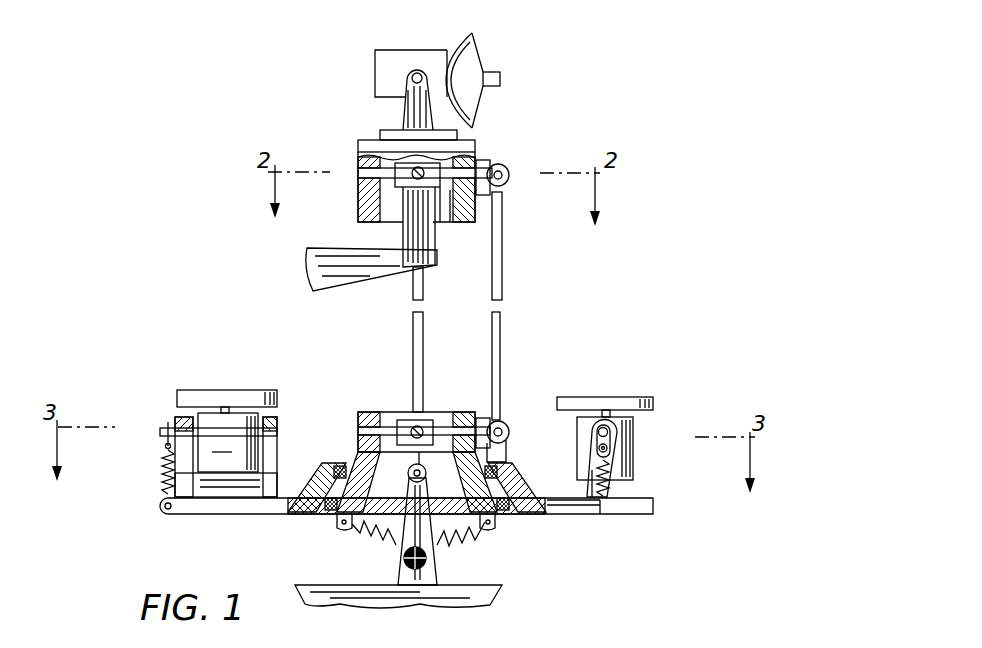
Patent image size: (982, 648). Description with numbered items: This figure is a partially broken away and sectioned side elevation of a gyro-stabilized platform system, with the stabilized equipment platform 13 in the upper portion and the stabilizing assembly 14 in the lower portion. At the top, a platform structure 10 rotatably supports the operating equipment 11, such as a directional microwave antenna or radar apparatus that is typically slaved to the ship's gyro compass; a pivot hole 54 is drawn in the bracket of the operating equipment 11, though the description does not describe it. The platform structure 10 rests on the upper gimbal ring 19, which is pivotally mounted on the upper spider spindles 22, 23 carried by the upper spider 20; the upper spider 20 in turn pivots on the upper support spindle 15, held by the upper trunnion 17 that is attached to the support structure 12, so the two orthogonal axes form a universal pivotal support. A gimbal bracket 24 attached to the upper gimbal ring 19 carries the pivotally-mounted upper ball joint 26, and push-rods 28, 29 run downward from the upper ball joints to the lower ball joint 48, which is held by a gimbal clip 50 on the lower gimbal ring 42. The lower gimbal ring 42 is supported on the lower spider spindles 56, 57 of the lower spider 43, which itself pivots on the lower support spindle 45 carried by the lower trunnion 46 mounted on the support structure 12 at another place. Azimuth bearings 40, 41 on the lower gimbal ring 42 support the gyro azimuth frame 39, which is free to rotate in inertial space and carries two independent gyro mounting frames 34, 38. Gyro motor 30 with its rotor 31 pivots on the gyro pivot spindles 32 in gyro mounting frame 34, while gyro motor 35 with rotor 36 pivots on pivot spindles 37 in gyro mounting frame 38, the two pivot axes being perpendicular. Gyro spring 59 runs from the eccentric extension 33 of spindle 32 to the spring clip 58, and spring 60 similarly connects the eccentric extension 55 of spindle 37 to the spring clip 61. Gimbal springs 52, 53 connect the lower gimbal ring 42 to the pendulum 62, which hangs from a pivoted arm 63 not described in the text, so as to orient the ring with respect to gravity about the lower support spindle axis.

The platform structure 10 is at (474, 145).
The operating equipment 11 is at (402, 92).
The support structure 12 is at (310, 266).
The equipment platform 13 is at (578, 58).
The stabilizing assembly 14 is at (590, 295).
The upper support spindle 15 is at (415, 186).
The upper trunnion 17 is at (405, 233).
The upper gimbal ring 19 is at (450, 213).
The upper spider 20 is at (400, 168).
The upper spider spindle 22 is at (470, 172).
The upper spider spindle 23 is at (360, 174).
The gimbal bracket 24 is at (503, 220).
The upper ball joint 26 is at (508, 165).
The push-rod 28 is at (503, 312).
The push-rod 29 is at (412, 312).
The gyro motor 30 is at (228, 442).
The rotor 31 is at (195, 392).
The gyro pivot spindle 32 is at (178, 424).
The eccentric extension 33 is at (163, 440).
The gyro mounting frame 34 is at (280, 465).
The gyro motor 35 is at (582, 450).
The rotor 36 is at (625, 396).
The pivot spindle 37 is at (625, 424).
The gyro mounting frame 38 is at (618, 462).
The gyro azimuth frame 39 is at (225, 514).
The azimuth bearing 40 is at (506, 470).
The azimuth bearing 41 is at (502, 520).
The lower gimbal ring 42 is at (378, 466).
The lower spider 43 is at (430, 430).
The lower support spindle 45 is at (410, 425).
The lower trunnion 46 is at (345, 538).
The lower ball joint 48 is at (512, 433).
The gimbal clip 50 is at (500, 420).
The gimbal spring 52 is at (378, 545).
The gimbal spring 53 is at (478, 548).
The pivot hole 54 is at (417, 70).
The eccentric extension 55 is at (610, 445).
The lower spider spindle 56 is at (450, 425).
The lower spider spindle 57 is at (392, 420).
The spring clip 58 is at (170, 512).
The gyro spring 59 is at (163, 478).
The spring 60 is at (622, 497).
The spring clip 61 is at (606, 520).
The pendulum 62 is at (430, 566).
The rocker arm 63 is at (428, 480).